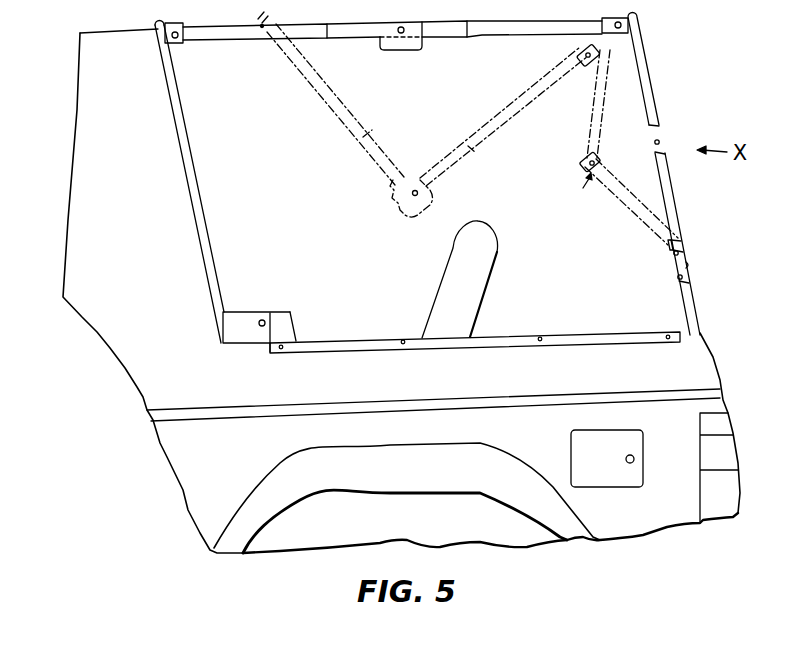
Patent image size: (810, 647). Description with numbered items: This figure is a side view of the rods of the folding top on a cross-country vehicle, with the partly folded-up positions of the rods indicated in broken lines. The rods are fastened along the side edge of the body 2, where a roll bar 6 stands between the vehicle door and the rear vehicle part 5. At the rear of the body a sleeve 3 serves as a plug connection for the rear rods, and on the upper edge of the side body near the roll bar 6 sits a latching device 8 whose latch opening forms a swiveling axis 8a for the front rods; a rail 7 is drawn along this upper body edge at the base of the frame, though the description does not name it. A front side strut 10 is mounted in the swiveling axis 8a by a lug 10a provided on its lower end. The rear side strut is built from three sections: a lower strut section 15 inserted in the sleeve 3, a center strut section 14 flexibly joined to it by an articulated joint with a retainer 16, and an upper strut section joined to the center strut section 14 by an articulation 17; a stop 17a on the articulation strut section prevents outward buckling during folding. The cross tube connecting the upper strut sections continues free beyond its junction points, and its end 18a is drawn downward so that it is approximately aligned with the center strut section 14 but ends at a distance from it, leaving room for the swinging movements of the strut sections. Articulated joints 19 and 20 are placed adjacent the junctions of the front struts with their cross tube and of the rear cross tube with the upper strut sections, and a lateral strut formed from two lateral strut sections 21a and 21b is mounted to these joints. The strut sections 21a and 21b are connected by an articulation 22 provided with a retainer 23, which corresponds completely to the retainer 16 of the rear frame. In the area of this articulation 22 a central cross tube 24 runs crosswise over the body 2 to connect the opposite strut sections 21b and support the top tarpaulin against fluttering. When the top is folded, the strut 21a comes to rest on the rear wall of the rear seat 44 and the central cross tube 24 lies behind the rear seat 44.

The body 2 is at (266, 392).
The sleeve 3 is at (693, 320).
The rear vehicle part 5 is at (695, 369).
The roll bar 6 is at (80, 121).
The bottom rail 7 is at (370, 337).
The latching device 8 is at (290, 317).
The swiveling axis 8a is at (262, 326).
The front side strut 10 is at (187, 168).
The lug 10a is at (240, 313).
The center strut section 14 is at (667, 175).
The lower strut section 15 is at (687, 278).
The retainer 16 is at (687, 247).
The articulation 17 is at (662, 140).
The stop 17a is at (595, 188).
The end of cross tube 18a is at (643, 72).
The articulated joint 19 is at (176, 43).
The articulated joint 20 is at (623, 25).
The lateral strut section 21a is at (218, 39).
The lateral strut section 21b is at (523, 35).
The articulation 22 is at (380, 37).
The retainer 23 is at (402, 34).
The central cross tube 24 is at (422, 49).
The rear seat 44 is at (453, 268).